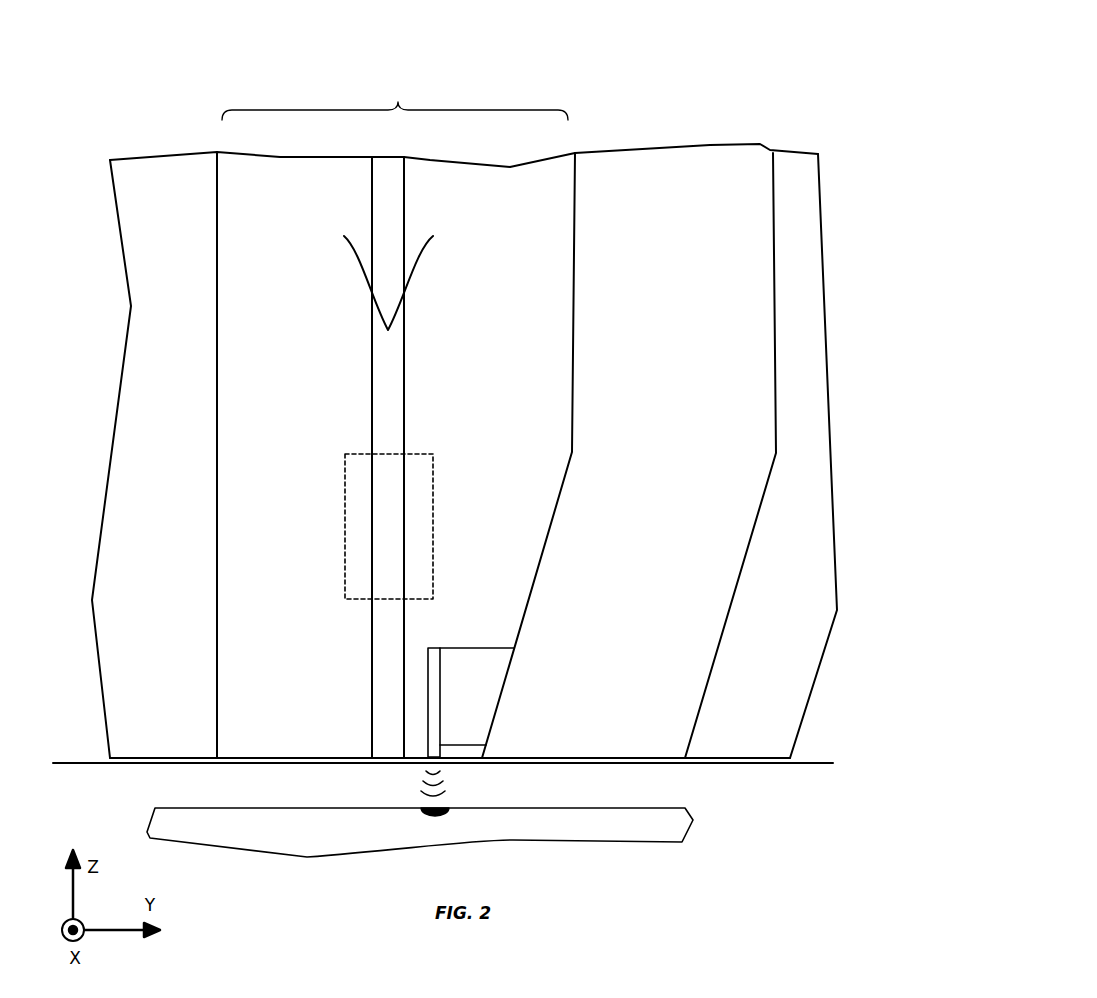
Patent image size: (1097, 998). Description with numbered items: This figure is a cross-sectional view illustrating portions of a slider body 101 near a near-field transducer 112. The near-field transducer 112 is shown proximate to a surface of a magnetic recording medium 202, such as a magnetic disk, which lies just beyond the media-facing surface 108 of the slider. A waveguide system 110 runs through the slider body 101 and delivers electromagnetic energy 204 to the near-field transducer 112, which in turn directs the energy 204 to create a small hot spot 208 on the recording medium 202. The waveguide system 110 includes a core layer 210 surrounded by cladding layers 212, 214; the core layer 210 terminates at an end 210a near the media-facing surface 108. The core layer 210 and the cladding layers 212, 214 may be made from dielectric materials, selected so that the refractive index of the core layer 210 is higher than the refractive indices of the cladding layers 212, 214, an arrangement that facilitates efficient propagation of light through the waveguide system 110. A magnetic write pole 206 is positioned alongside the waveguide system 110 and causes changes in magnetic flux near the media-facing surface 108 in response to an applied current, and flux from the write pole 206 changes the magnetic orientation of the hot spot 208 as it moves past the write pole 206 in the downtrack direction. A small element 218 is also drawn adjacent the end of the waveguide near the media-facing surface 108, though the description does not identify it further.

The slider body 101 is at (708, 72).
The waveguide system 110 is at (395, 96).
The cladding layer 214 is at (240, 153).
The core layer 210 is at (392, 157).
The fiber channel outlet end 210a is at (373, 705).
The cladding layer 212 is at (435, 170).
The magnetic write pole 206 is at (688, 143).
The electromagnetic energy 204 is at (413, 260).
The bracket 218 is at (468, 658).
The media-facing surface 108 is at (737, 765).
The near-field transducer 112 is at (432, 740).
The magnetic recording medium 202 is at (207, 830).
The hot spot 208 is at (437, 813).